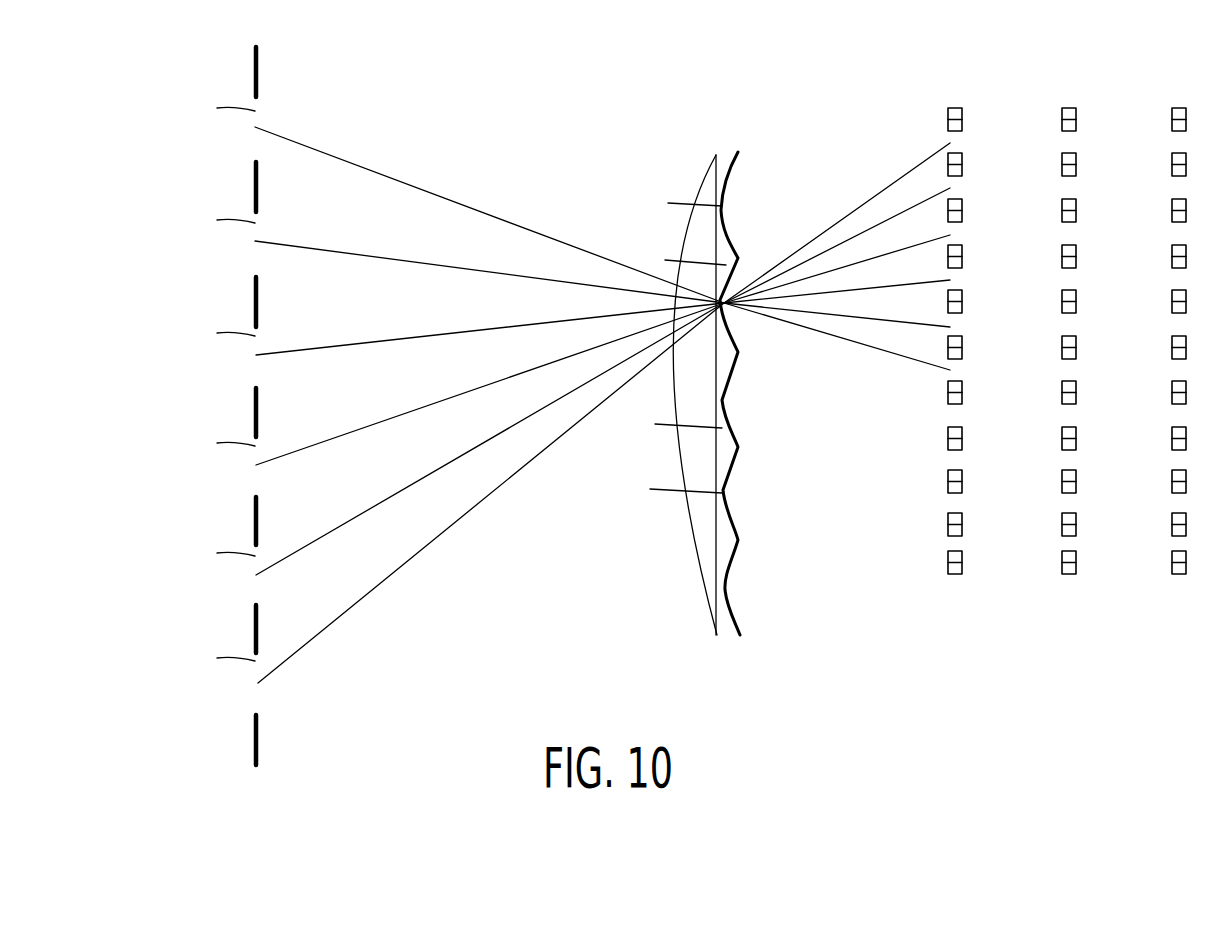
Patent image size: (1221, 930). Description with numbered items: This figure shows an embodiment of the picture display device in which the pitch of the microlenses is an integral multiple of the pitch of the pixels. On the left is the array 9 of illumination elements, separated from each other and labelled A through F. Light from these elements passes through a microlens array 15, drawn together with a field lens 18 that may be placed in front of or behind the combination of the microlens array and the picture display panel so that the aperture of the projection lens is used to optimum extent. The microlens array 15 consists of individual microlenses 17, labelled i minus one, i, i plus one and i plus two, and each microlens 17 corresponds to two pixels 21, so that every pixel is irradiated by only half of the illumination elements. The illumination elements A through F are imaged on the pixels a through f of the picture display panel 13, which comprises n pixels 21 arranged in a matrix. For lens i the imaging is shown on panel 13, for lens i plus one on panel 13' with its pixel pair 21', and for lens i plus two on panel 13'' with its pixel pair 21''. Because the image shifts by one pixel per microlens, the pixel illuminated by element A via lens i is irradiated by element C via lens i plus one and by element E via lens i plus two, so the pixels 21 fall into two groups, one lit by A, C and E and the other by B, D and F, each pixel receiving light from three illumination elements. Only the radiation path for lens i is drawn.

The array of illumination elements 9 is at (258, 788).
The picture display panel 13 is at (978, 301).
The picture display panel 13' is at (1085, 318).
The picture display panel 13'' is at (1170, 318).
The microlens array 15 is at (717, 440).
The microlens 17 is at (730, 566).
The field lens 18 is at (705, 577).
The pixel 21 is at (981, 543).
The pixel 21' is at (1089, 560).
The pixel 21'' is at (1161, 560).